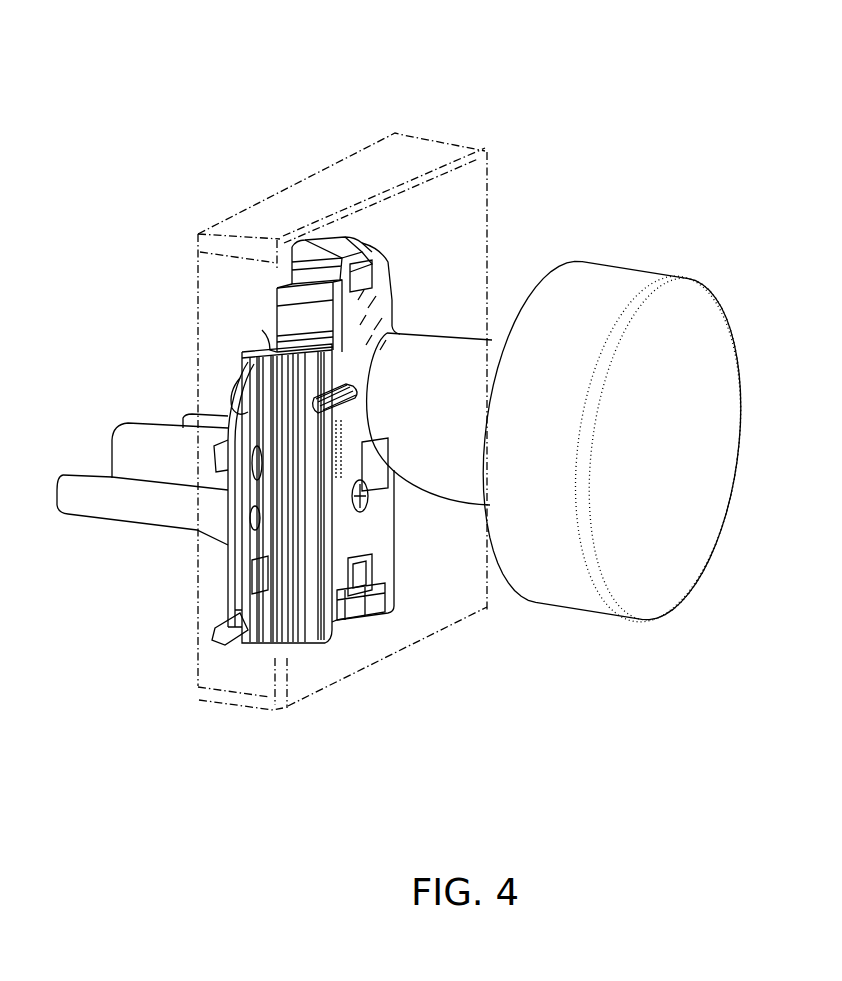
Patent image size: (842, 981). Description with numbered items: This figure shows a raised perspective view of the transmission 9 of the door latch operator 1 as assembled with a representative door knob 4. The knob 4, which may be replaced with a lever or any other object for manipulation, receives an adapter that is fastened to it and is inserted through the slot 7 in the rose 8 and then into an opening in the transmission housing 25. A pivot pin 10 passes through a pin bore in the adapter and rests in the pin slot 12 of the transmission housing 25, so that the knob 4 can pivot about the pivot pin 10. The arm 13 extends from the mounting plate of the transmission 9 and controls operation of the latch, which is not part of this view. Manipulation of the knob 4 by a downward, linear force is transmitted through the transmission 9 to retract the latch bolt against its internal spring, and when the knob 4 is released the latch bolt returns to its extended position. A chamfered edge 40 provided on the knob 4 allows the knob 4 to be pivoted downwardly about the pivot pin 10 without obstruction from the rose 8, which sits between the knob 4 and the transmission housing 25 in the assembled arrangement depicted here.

The door latch operator 1 is at (704, 129).
The knob 4 is at (705, 297).
The slot 7 is at (346, 488).
The rose 8 is at (442, 630).
The transmission 9 is at (389, 253).
The pivot pin 10 is at (247, 378).
The pin slot 12 is at (320, 387).
The arm 13 is at (135, 440).
The transmission housing 25 is at (315, 622).
The chamfered edge 40 is at (406, 482).